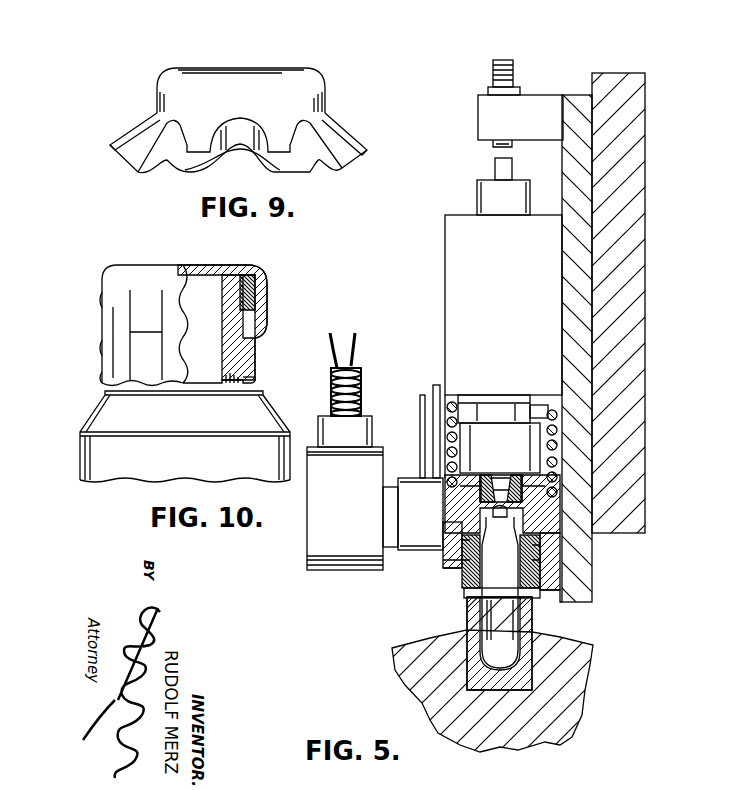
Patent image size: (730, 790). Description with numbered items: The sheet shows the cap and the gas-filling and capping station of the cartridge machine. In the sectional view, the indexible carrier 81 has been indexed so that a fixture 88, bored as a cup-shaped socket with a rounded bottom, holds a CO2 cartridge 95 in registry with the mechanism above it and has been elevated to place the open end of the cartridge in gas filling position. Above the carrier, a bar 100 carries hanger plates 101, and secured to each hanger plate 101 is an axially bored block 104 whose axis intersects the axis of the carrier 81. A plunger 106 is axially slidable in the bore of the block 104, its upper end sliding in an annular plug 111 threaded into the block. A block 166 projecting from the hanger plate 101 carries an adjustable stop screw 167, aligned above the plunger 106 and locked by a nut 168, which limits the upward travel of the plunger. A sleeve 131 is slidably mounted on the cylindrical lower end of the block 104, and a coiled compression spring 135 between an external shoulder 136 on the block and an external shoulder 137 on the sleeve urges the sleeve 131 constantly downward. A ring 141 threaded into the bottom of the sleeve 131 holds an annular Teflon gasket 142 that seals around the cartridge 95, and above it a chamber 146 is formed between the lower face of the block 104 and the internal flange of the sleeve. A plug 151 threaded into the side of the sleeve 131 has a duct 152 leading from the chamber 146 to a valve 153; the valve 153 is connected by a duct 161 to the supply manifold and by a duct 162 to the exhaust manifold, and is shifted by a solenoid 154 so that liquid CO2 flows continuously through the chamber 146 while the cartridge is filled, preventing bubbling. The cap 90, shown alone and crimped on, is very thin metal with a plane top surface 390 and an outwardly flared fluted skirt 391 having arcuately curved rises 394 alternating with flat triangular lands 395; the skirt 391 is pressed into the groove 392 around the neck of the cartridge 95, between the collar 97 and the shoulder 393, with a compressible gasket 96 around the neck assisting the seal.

In FIG. 5, the indexible drum or carrier 81 is at (585, 686).
In FIG. 5, the fixture 88 is at (545, 652).
In FIG. 9, the cartridge cap 90 is at (332, 74).
In FIG. 10, the cartridge cap 90 is at (285, 294).
In FIG. 5, the cartridge cap 90 is at (496, 473).
In FIG. 10, the CO2 cartridge 95 is at (214, 460).
In FIG. 5, the CO2 cartridge 95 is at (482, 614).
In FIG. 10, the compressible gasket 96 is at (256, 278).
In FIG. 10, the collar 97 is at (262, 320).
In FIG. 5, the bar 100 is at (648, 300).
In FIG. 5, the hanger plate 101 is at (580, 596).
In FIG. 5, the axially bored block 104 is at (445, 270).
In FIG. 5, the plunger 106 is at (510, 170).
In FIG. 5, the annular plug 111 is at (530, 198).
In FIG. 5, the sleeve 131 is at (560, 565).
In FIG. 5, the coiled compression spring 135 is at (546, 406).
In FIG. 5, the external shoulder 136 is at (458, 396).
In FIG. 5, the external shoulder 137 is at (560, 505).
In FIG. 5, the ring 141 is at (538, 596).
In FIG. 5, the annular Teflon gasket 142 is at (540, 552).
In FIG. 5, the chamber 146 is at (540, 540).
In FIG. 5, the plug 151 is at (443, 548).
In FIG. 5, the duct 152 is at (447, 562).
In FIG. 5, the valve 153 is at (436, 534).
In FIG. 5, the solenoid 154 is at (307, 547).
In FIG. 5, the duct 161 is at (420, 410).
In FIG. 5, the duct 162 is at (433, 385).
In FIG. 5, the block 166 is at (540, 124).
In FIG. 5, the adjustable stop screw 167 is at (495, 60).
In FIG. 5, the nut 168 is at (488, 88).
In FIG. 9, the plane top surface 390 is at (240, 69).
In FIG. 10, the plane top surface 390 is at (160, 266).
In FIG. 9, the outwardly flared, corrugated or fluted skirt 391 is at (343, 124).
In FIG. 10, the outwardly flared, corrugated or fluted skirt 391 is at (255, 360).
In FIG. 10, the groove 392 is at (252, 378).
In FIG. 10, the shoulder 393 is at (263, 392).
In FIG. 9, the arcuately curved rise 394 is at (183, 172).
In FIG. 9, the flat triangular shaped land 395 is at (124, 144).